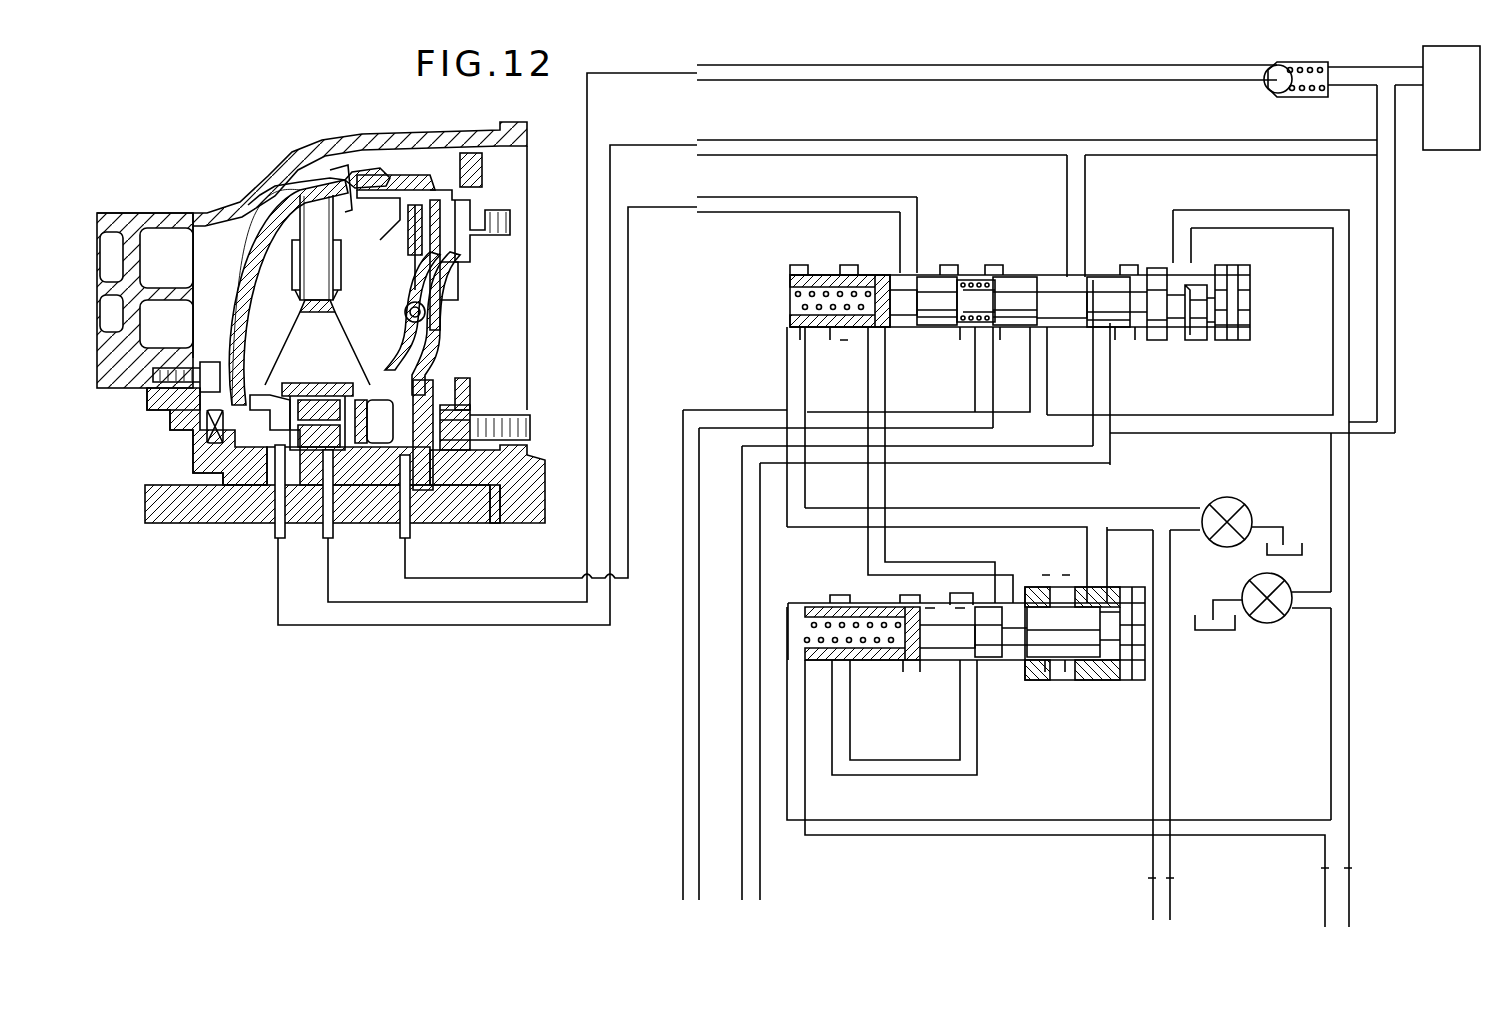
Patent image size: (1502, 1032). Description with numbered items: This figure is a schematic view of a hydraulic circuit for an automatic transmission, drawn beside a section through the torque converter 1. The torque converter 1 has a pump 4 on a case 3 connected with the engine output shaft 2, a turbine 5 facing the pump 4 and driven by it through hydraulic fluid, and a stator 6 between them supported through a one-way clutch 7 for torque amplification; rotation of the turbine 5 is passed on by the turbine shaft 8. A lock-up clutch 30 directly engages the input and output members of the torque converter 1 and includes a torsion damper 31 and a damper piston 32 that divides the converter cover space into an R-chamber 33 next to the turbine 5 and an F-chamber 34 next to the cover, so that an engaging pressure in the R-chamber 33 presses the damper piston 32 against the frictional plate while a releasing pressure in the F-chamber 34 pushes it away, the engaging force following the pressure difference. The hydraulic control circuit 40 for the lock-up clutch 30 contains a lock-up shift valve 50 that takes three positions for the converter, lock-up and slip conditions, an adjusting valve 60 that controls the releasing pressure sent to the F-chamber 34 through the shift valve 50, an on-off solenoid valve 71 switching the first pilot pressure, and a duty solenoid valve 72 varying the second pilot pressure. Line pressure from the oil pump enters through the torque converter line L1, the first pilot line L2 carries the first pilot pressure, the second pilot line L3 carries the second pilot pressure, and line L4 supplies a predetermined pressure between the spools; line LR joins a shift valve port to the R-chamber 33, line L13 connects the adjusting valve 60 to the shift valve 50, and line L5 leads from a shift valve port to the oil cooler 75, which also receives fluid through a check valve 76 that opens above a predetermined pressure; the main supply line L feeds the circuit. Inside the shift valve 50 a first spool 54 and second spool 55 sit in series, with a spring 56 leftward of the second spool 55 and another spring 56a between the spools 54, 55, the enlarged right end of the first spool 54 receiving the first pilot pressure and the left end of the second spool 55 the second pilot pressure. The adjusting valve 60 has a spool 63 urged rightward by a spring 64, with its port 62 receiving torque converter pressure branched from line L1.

The torque converter 1 is at (329, 126).
The engine output shaft 2 is at (535, 484).
The case 3 is at (278, 192).
The pump 4 is at (256, 270).
The turbine 5 is at (350, 215).
The stator 6 is at (336, 292).
The one-way clutch 7 is at (318, 382).
The turbine shaft 8 is at (210, 522).
The lock-up clutch 30 is at (433, 200).
The torsion damper 31 is at (442, 266).
The damper piston 32 is at (456, 330).
The R-chamber 33 is at (388, 205).
The F-chamber 34 is at (432, 362).
The hydraulic control circuit 40 is at (1421, 277).
The lock-up shift valve 50 is at (1272, 282).
The first spool 54 is at (1015, 282).
The second spool 55 is at (950, 282).
The spring 56 is at (820, 272).
The spring 56a is at (978, 322).
The adjusting valve 60 is at (849, 576).
The port 62 is at (1085, 633).
The spool 63 is at (988, 662).
The spring 64 is at (812, 612).
The on-off solenoid valve 71 is at (1275, 622).
The duty solenoid valve 72 is at (1235, 500).
The oil cooler 75 is at (1450, 150).
The check valve 76 is at (1292, 98).
The line L is at (924, 146).
The line LR is at (886, 200).
The torque converter line L1 is at (755, 876).
The first pilot line L2 is at (1342, 870).
The second pilot line L3 is at (1166, 909).
The line L4 is at (680, 830).
The line L5 is at (1252, 415).
The line L13 is at (885, 490).